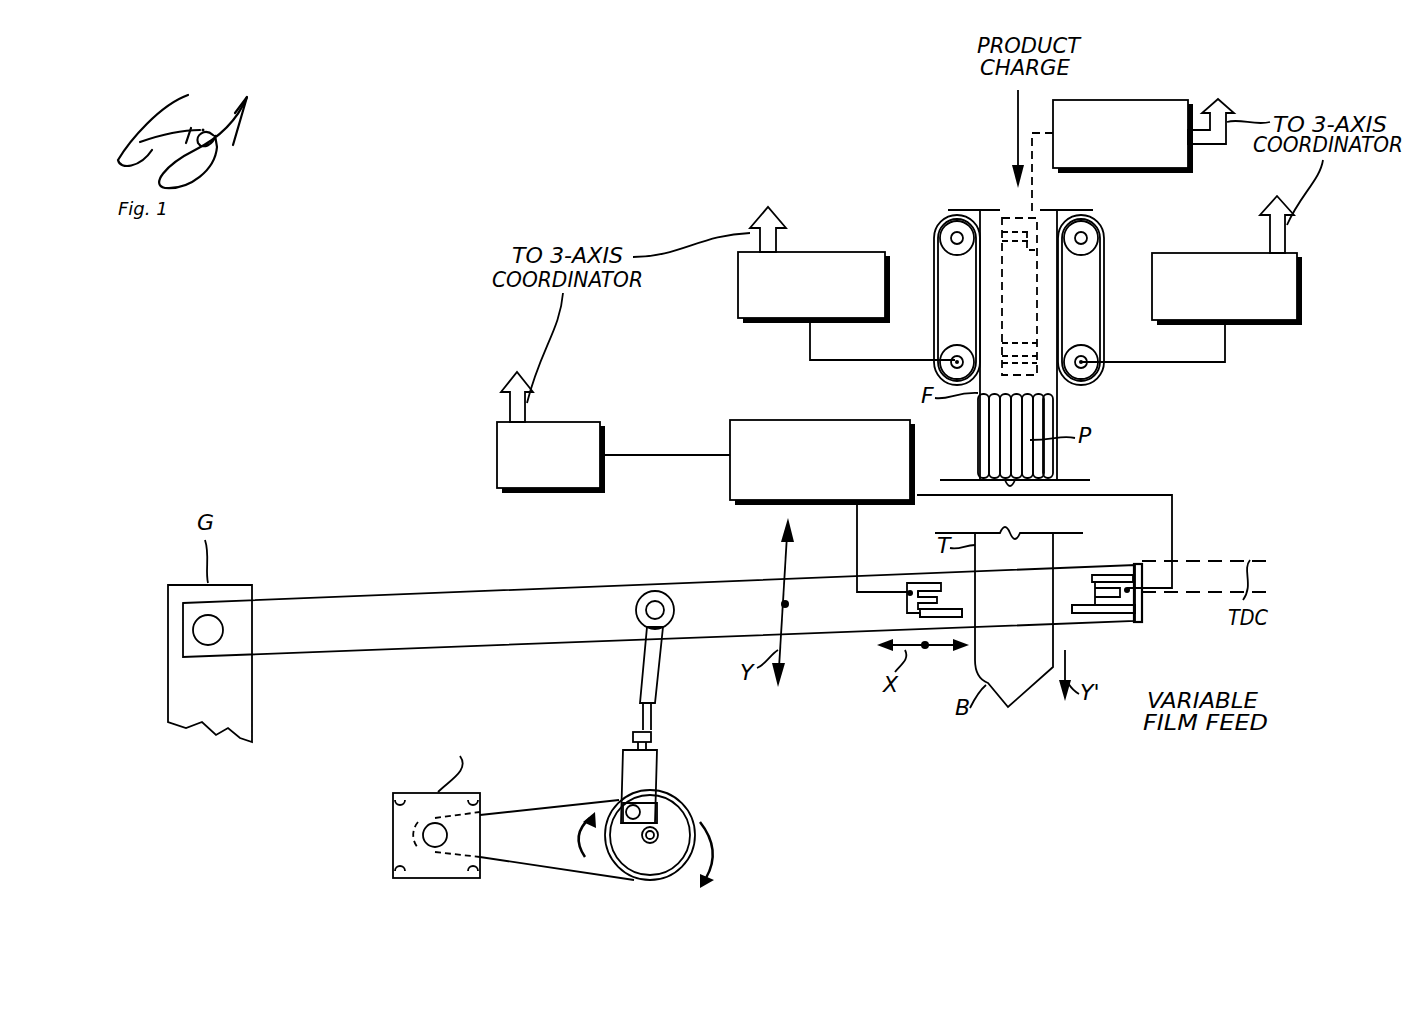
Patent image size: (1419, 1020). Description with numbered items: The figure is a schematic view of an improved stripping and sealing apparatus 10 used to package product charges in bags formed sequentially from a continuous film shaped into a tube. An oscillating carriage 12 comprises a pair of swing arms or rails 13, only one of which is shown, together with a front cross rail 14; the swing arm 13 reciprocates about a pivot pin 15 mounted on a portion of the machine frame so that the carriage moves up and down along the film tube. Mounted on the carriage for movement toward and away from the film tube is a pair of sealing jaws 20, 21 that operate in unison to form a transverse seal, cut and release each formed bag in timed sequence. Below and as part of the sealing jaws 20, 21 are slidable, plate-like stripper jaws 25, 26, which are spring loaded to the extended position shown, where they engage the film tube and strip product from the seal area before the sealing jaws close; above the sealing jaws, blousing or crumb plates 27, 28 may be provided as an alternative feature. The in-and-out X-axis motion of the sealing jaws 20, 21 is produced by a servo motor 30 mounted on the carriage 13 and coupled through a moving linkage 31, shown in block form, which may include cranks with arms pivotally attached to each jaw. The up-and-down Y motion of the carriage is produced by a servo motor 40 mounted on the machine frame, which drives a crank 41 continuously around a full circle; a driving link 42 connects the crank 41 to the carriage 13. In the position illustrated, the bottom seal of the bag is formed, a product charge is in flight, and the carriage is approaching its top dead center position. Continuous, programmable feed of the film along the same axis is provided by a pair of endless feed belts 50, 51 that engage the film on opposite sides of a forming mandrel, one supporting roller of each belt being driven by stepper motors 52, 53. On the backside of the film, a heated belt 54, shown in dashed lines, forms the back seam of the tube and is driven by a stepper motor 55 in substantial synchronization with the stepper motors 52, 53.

The stripping and sealing apparatus 10 is at (666, 180).
The carriage 12 is at (818, 686).
The swing arm 13 is at (431, 600).
The front cross rail 14 is at (1143, 622).
The pivot pin 15 is at (195, 633).
The sealing jaw 20 is at (905, 592).
The sealing jaw 21 is at (1130, 578).
The stripper jaw 25 is at (947, 617).
The stripper jaw 26 is at (1100, 614).
The blousing or crumb plate 27 is at (925, 585).
The blousing or crumb plate 28 is at (1108, 578).
The servo motor 30 is at (578, 422).
The moving linkage 31 is at (730, 486).
The servo motor 40 is at (393, 833).
The crank 41 is at (668, 818).
The driving link 42 is at (647, 665).
The endless feed belt 50 is at (935, 225).
The endless feed belt 51 is at (1100, 233).
The stepper motor 52 is at (760, 318).
The stepper motor 53 is at (1282, 318).
The heated belt 54 is at (1011, 222).
The stepper motor 55 is at (1135, 100).